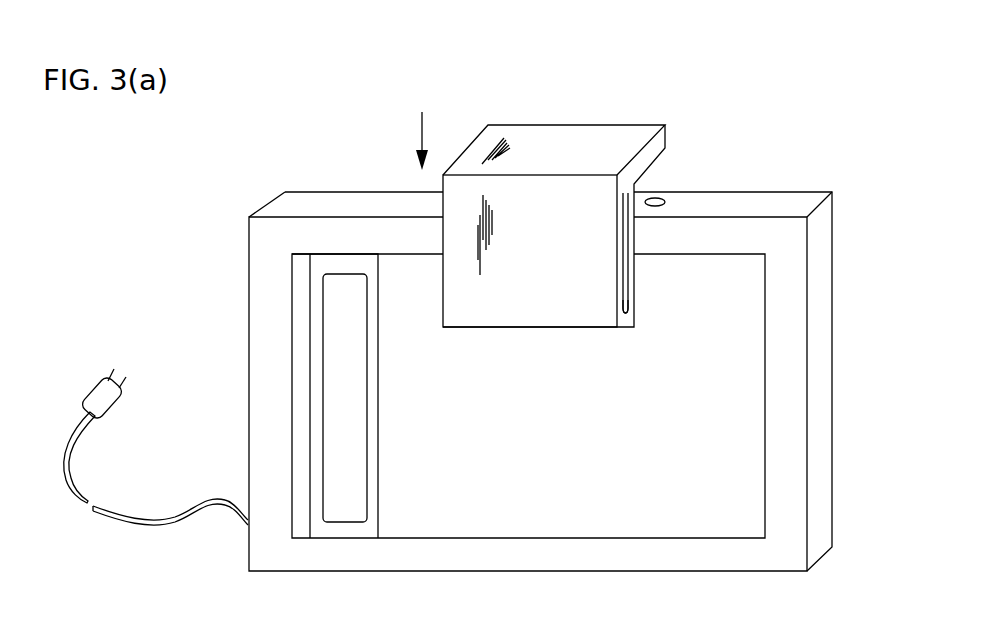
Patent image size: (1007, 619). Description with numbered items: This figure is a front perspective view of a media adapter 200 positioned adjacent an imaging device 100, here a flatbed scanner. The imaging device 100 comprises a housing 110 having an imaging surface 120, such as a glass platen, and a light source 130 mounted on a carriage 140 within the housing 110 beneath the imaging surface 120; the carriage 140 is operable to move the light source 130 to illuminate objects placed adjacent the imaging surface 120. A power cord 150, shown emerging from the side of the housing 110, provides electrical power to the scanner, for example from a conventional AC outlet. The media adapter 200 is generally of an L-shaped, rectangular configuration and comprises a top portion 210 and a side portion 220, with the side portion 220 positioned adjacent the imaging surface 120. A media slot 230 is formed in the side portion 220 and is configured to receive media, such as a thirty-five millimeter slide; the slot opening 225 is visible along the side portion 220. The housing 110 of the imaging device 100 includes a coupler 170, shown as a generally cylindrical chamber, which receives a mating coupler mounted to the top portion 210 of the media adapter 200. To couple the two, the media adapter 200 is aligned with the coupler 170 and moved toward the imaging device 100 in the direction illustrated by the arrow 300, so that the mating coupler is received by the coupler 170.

The imaging device 100 is at (206, 305).
The housing 110 is at (287, 203).
The imaging surface 120 is at (637, 433).
The light source 130 is at (367, 437).
The carriage 140 is at (378, 350).
The power cord 150 is at (147, 532).
The coupler 170 is at (665, 201).
The media adapter 200 is at (598, 137).
The top portion 210 is at (667, 143).
The side portion 220 is at (532, 328).
The groove 225 is at (633, 294).
The media slot 230 is at (626, 313).
The arrow 300 is at (420, 130).